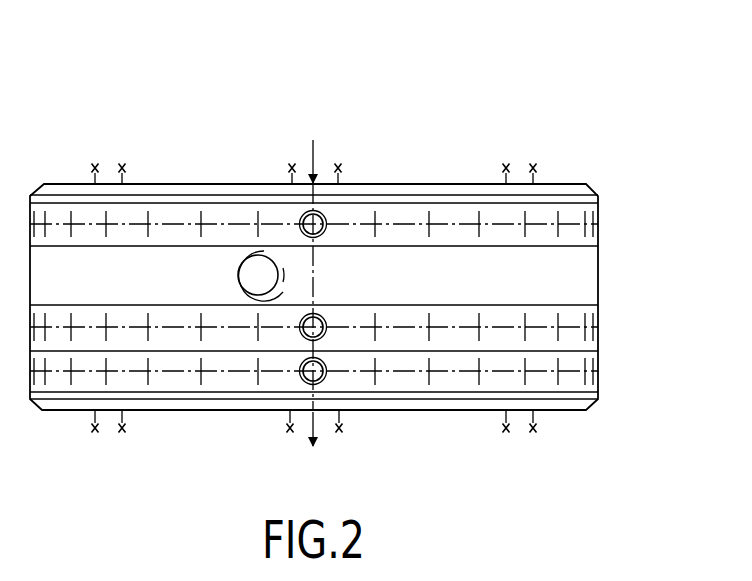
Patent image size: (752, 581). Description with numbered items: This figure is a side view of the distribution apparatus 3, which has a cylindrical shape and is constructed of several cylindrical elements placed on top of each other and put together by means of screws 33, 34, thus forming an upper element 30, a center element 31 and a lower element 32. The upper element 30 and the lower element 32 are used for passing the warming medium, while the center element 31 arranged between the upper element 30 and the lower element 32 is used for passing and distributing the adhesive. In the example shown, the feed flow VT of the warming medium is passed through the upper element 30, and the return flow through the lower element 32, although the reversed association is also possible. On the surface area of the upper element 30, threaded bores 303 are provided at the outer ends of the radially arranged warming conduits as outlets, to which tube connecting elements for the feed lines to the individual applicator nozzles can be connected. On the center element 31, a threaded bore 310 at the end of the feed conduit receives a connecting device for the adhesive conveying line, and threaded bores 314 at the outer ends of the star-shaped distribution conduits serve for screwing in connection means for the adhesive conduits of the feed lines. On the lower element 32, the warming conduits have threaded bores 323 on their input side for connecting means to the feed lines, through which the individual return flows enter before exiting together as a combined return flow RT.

The distribution apparatus 3 is at (462, 114).
The upper element 30 is at (600, 212).
The center element 31 is at (600, 285).
The lower element 32 is at (600, 368).
The screws 33 is at (338, 164).
The screws 34 is at (341, 433).
The threaded bores 303 is at (323, 216).
The threaded bore 310 is at (240, 272).
The threaded bores 314 is at (322, 319).
The threaded bores 323 is at (327, 373).